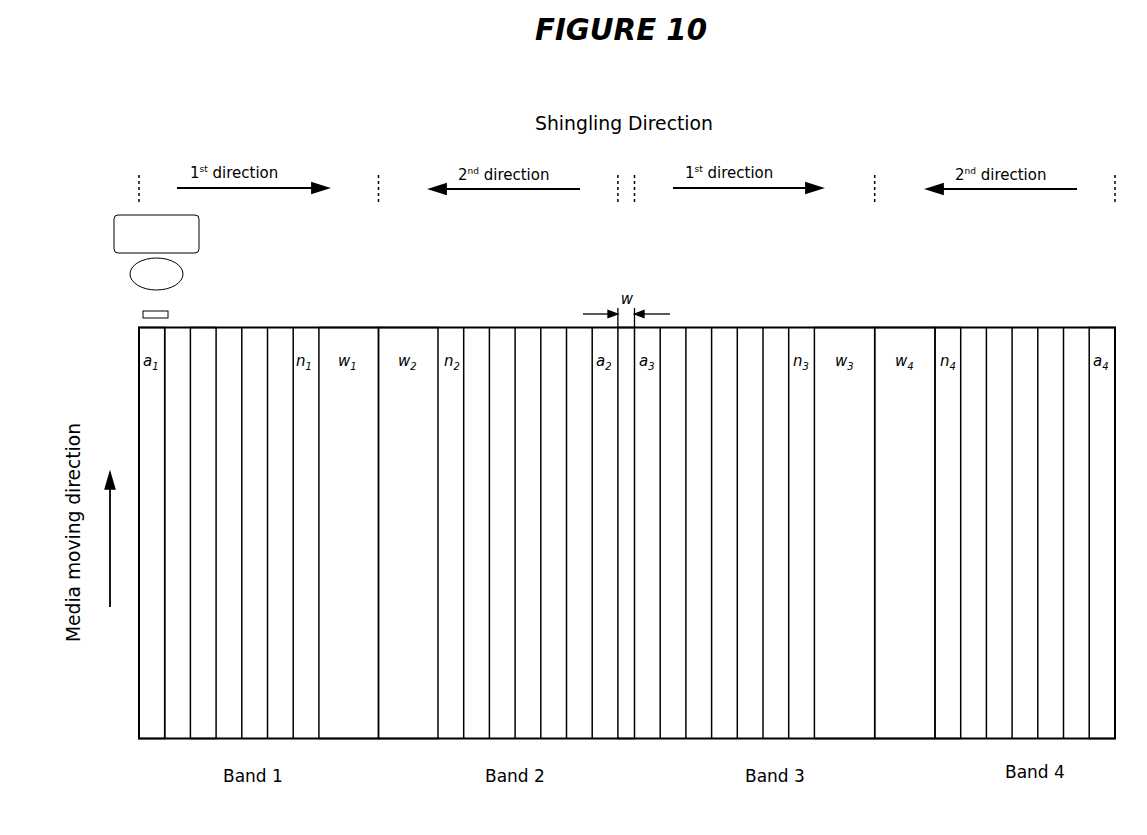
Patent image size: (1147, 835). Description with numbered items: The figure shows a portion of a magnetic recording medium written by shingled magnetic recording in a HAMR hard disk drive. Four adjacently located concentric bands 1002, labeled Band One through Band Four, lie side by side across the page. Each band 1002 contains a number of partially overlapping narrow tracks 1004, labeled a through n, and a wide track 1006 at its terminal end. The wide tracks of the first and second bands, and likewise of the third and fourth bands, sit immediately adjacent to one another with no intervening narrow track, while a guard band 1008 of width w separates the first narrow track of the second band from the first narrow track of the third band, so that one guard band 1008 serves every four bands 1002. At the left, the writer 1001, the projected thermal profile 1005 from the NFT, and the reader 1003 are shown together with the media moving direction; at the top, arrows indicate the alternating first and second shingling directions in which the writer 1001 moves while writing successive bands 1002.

The writer 1001 is at (114, 235).
The band 1002 is at (200, 757).
The reader 1003 is at (143, 315).
The narrow track 1004 is at (157, 722).
The projected thermal profile 1005 is at (130, 272).
The wide track 1006 is at (345, 722).
The guard band 1008 is at (625, 722).